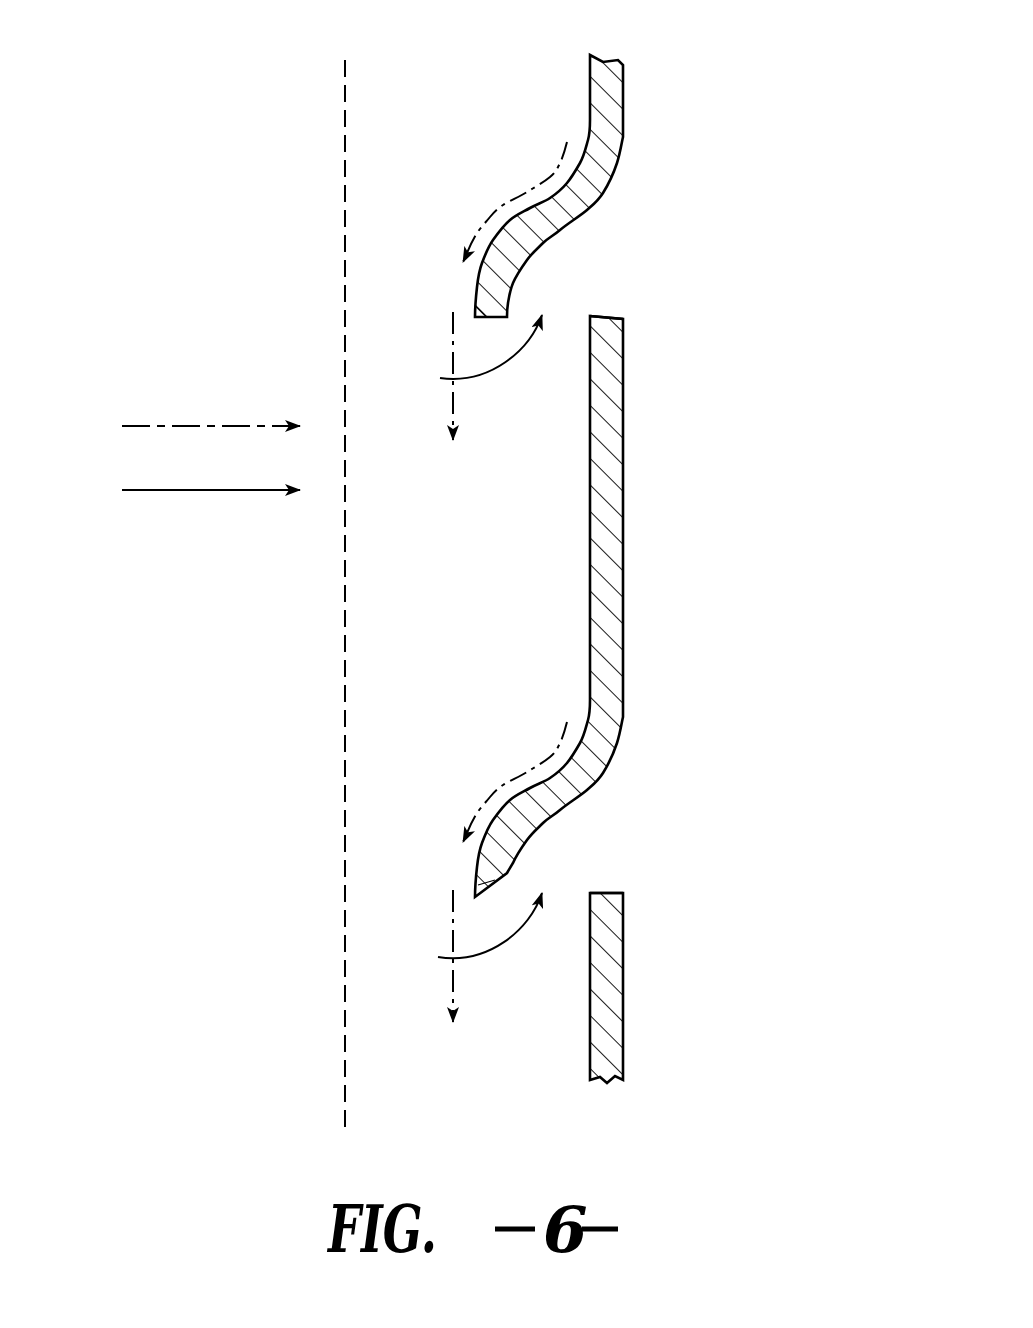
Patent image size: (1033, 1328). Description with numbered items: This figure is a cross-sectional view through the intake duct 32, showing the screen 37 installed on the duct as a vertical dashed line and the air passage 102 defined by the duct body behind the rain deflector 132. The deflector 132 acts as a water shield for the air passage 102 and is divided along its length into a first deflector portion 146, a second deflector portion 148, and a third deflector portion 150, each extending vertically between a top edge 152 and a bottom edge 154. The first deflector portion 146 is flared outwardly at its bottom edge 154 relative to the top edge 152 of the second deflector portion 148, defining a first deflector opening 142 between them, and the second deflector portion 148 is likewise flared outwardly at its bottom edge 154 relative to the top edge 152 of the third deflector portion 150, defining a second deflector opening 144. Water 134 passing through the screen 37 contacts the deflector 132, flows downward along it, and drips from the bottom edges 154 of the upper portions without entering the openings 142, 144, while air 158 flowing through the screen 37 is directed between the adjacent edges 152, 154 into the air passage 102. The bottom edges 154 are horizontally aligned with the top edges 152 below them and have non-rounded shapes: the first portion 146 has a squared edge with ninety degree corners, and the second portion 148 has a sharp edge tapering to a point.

The intake duct 32 is at (208, 130).
The screen 37 is at (345, 128).
The air passage 102 is at (790, 589).
The rain deflector 132 is at (490, 600).
The water 134 is at (199, 426).
The first deflector opening 142 is at (577, 273).
The second deflector opening 144 is at (575, 853).
The first deflector portion 146 is at (633, 97).
The second deflector portion 148 is at (633, 457).
The third deflector portion 150 is at (633, 1008).
The top edge 152 is at (607, 315).
The bottom edge 154 is at (490, 318).
The air 158 is at (200, 490).